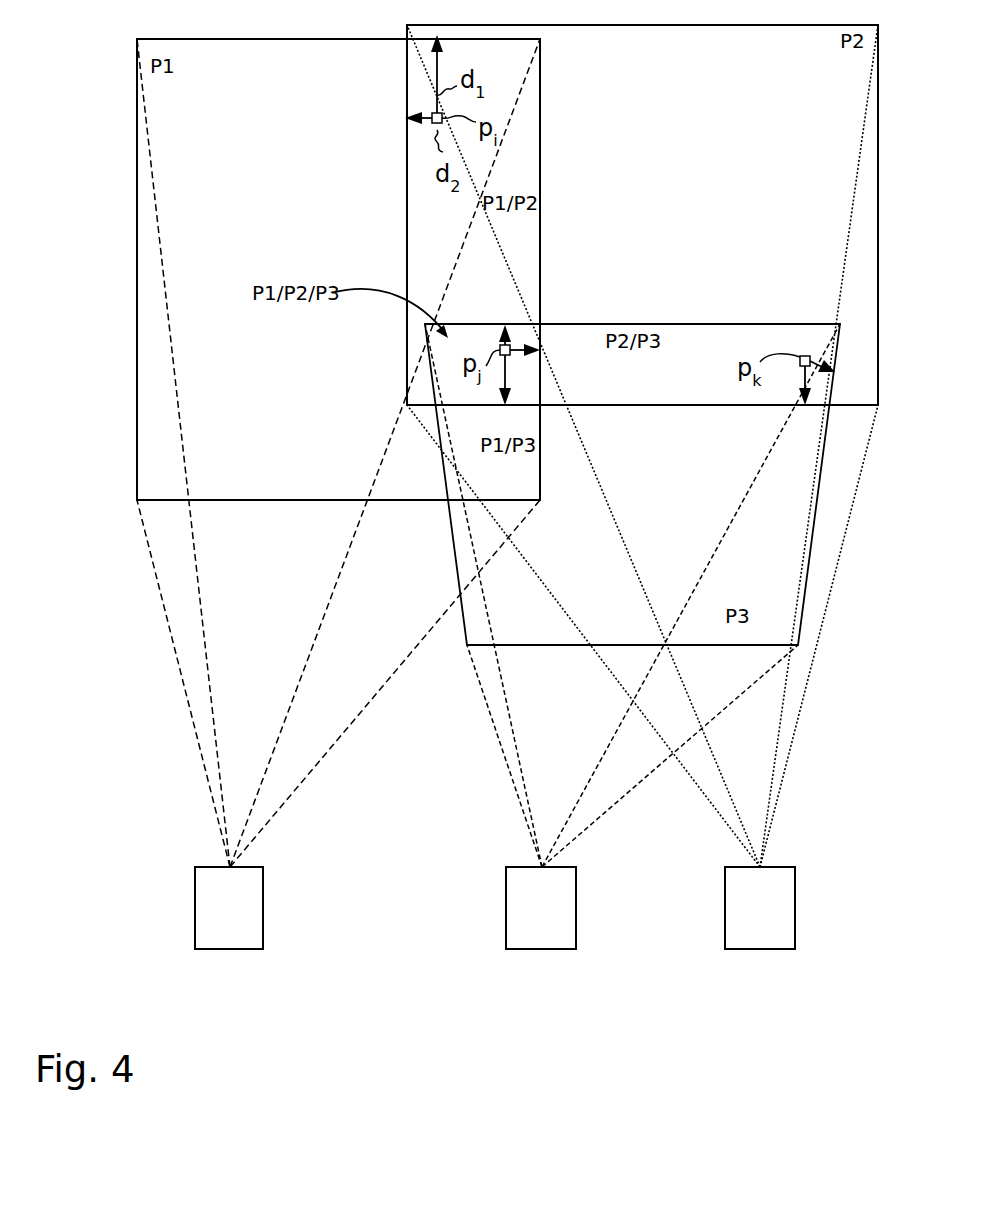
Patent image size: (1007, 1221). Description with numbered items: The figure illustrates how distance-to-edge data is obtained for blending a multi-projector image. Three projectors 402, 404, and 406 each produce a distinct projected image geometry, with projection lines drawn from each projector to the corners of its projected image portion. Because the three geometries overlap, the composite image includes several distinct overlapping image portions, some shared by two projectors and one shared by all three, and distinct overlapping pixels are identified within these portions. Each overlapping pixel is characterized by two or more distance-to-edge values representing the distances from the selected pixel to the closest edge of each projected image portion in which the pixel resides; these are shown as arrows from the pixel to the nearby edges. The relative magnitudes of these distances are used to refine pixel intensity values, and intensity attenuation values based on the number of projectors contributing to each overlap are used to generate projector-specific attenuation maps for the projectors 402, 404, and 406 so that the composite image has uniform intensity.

The projector 402 is at (263, 922).
The projector 404 is at (795, 922).
The projector 406 is at (576, 922).